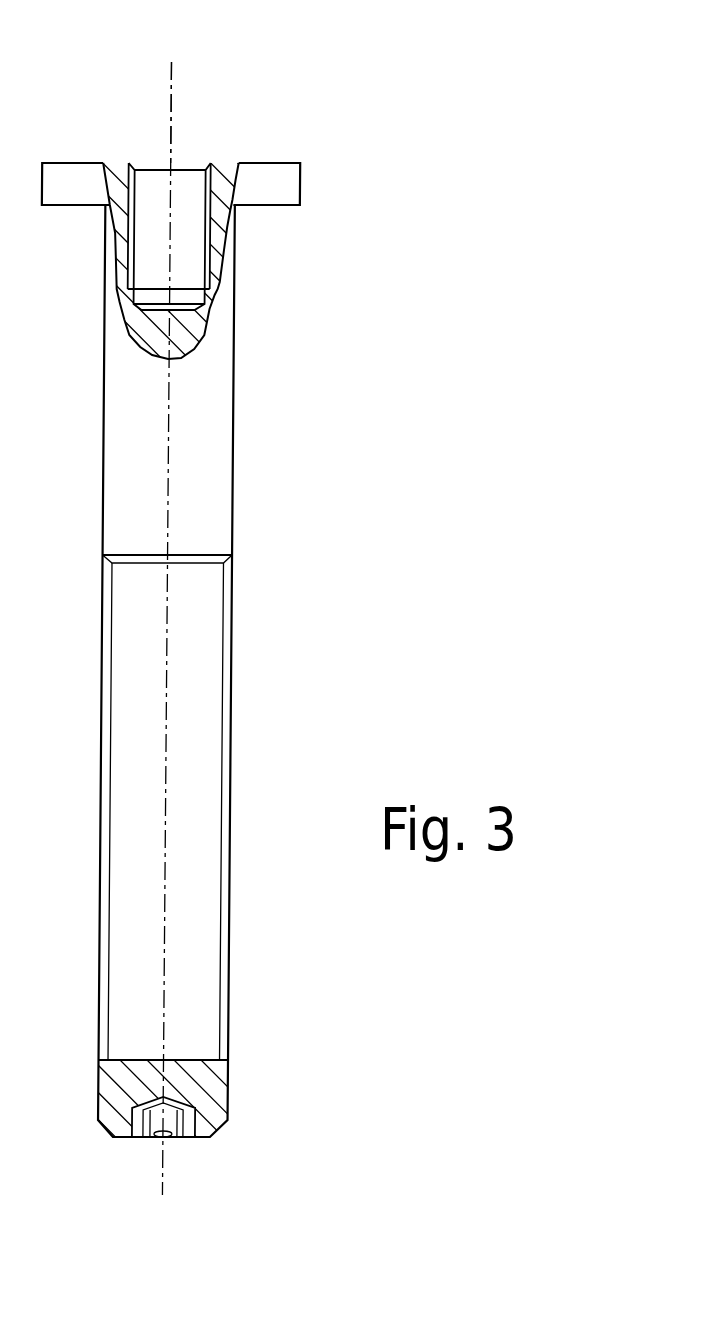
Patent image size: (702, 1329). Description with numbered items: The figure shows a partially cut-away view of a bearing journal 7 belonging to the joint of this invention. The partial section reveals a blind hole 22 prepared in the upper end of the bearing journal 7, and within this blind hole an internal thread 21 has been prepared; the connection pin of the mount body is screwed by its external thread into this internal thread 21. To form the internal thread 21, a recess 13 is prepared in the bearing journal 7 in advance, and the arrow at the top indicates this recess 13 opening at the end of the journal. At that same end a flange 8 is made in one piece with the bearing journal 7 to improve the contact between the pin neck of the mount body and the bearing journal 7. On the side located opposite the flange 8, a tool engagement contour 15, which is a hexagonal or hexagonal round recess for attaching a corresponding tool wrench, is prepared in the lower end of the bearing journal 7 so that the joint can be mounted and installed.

The bearing journal 7 is at (203, 480).
The flange 8 is at (277, 183).
The recess 13 is at (188, 150).
The tool engagement contour 15 is at (175, 1147).
The internal thread 21 is at (210, 238).
The blind hole 22 is at (197, 293).